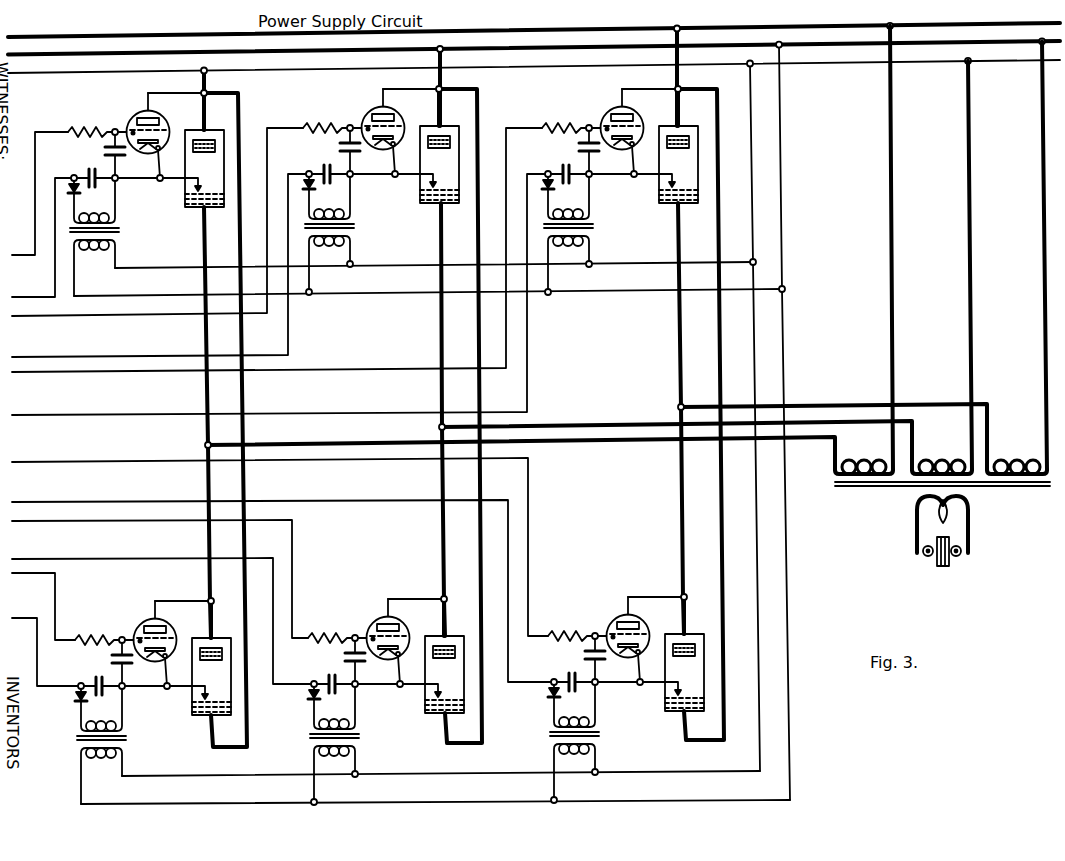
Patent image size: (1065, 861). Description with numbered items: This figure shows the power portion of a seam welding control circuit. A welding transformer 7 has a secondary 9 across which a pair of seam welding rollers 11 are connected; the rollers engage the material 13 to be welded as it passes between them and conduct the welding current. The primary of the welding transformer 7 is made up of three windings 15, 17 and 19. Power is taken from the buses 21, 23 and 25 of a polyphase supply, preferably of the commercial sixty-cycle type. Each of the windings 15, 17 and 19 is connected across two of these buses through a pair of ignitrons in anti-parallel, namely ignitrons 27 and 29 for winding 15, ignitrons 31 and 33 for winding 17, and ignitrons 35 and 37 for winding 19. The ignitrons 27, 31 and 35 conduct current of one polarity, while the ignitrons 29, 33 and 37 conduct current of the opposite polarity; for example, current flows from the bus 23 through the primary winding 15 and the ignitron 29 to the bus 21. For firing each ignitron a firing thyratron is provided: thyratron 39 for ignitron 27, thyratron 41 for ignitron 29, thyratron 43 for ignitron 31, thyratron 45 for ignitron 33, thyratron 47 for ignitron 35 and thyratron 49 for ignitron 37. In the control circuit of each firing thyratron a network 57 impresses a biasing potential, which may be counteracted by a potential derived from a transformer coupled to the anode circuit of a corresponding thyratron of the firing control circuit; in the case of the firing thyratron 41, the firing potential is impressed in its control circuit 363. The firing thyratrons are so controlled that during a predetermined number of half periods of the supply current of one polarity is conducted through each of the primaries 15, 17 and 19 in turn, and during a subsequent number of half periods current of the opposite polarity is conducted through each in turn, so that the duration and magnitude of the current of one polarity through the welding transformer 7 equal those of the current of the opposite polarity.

The bus 21 is at (826, 27).
The bus 23 is at (836, 46).
The bus 25 is at (862, 64).
The firing thyratron 47 is at (159, 135).
The firing thyratron 43 is at (394, 131).
The firing thyratron 39 is at (633, 131).
The firing thyratron 49 is at (166, 643).
The firing thyratron 45 is at (399, 641).
The firing thyratron 41 is at (639, 639).
The ignitron 35 is at (191, 155).
The ignitron 31 is at (419, 151).
The ignitron 27 is at (660, 150).
The ignitron 37 is at (197, 660).
The ignitron 33 is at (429, 659).
The ignitron 29 is at (668, 656).
The network for impressing a biasing potential 57 is at (333, 489).
The control circuit 363 is at (565, 650).
The winding 19 is at (855, 457).
The winding 17 is at (933, 457).
The winding 15 is at (1007, 457).
The welding transformer 7 is at (1048, 507).
The secondary 9 is at (917, 498).
The seam welding rollers 11 is at (926, 557).
The material 13 is at (946, 568).